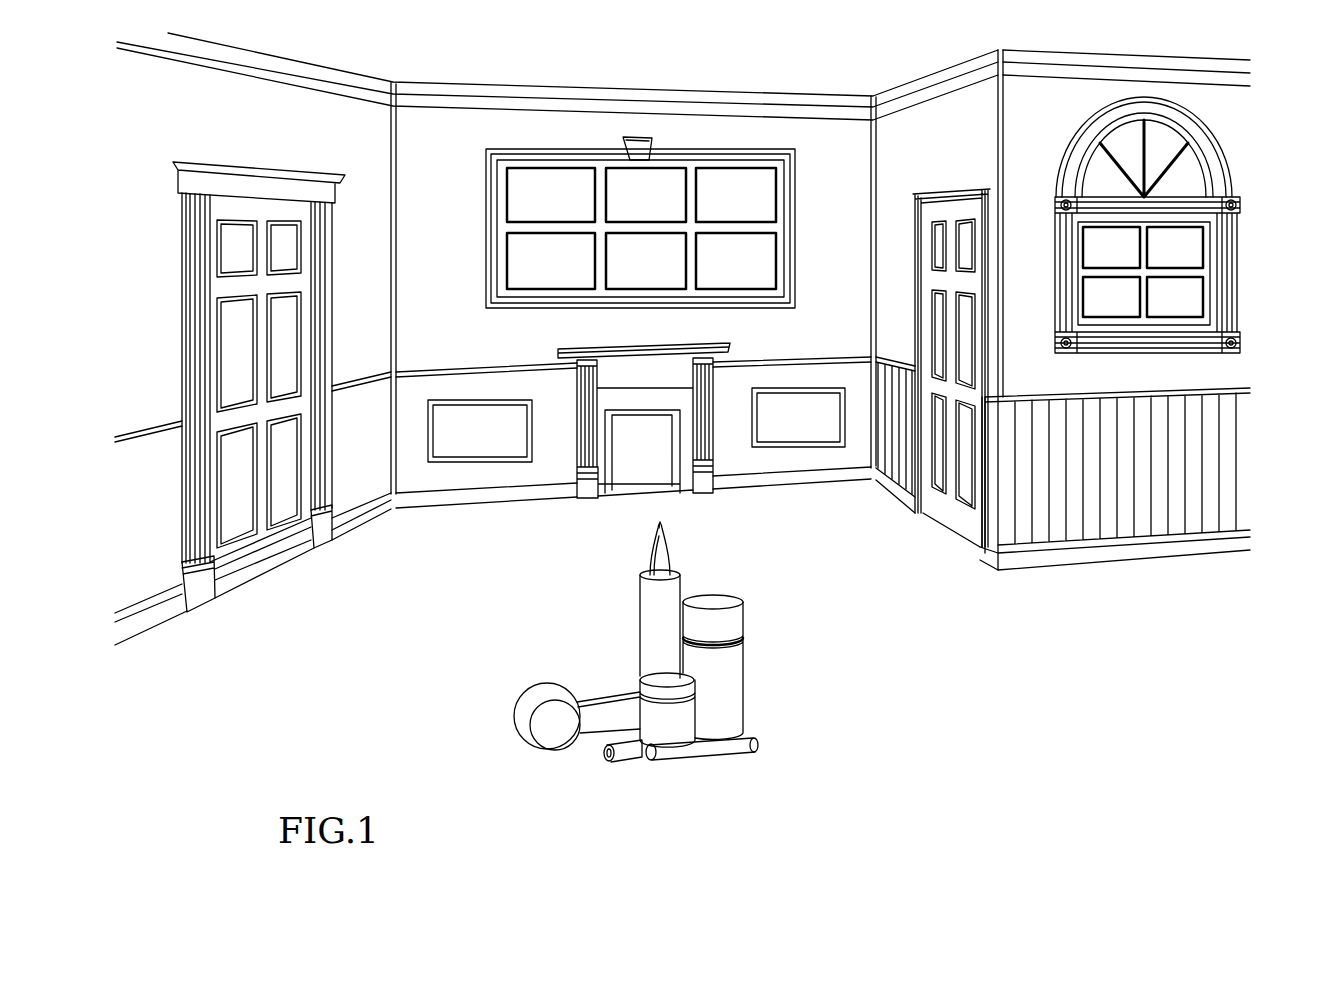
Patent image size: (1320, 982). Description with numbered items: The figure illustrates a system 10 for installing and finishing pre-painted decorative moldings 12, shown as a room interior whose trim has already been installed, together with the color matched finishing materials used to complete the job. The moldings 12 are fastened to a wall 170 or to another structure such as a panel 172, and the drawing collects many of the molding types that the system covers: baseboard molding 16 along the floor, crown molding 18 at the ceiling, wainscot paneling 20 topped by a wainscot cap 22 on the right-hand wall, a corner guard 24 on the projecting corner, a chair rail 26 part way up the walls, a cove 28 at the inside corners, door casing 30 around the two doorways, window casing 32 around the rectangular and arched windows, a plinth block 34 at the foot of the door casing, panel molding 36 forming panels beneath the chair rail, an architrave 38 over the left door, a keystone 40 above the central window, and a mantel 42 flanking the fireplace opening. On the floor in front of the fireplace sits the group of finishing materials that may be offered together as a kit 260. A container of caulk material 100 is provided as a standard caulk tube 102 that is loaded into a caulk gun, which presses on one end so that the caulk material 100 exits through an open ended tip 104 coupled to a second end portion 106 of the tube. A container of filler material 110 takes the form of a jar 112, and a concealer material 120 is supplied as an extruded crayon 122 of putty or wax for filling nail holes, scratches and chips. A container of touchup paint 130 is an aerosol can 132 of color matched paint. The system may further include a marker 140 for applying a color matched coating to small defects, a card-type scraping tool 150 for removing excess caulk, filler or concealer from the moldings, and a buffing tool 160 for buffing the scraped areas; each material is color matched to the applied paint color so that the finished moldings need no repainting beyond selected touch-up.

The system 10 is at (714, 577).
The pre-painted decorative moldings 12 is at (812, 179).
The baseboard molding 16 is at (505, 496).
The crown molding 18 is at (257, 62).
The wainscot paneling 20 is at (1063, 475).
The wainscot cap 22 is at (888, 362).
The corner guard 24 is at (1005, 177).
The chair rail 26 is at (155, 425).
The cove 28 is at (397, 212).
The door casing 30 is at (183, 290).
The window casing 32 is at (490, 225).
The plinth block 34 is at (203, 595).
The panel molding 36 is at (472, 456).
The architrave 38 is at (235, 182).
The keystone 40 is at (650, 144).
The mantel 42 is at (625, 345).
The caulk material 100 is at (640, 590).
The caulk tube 102 is at (660, 615).
The open ended tip 104 is at (655, 535).
The second end portion 106 is at (647, 572).
The filler material 110 is at (650, 683).
The jar 112 is at (668, 676).
The concealer material 120 is at (667, 768).
The crayon 122 is at (728, 750).
The touchup paint 130 is at (733, 665).
The aerosol can 132 is at (717, 692).
The marker 140 is at (608, 757).
The scraping tool 150 is at (597, 695).
The buffing tool 160 is at (548, 723).
The wall 170 is at (318, 138).
The panel 172 is at (407, 460).
The kit 260 is at (805, 598).